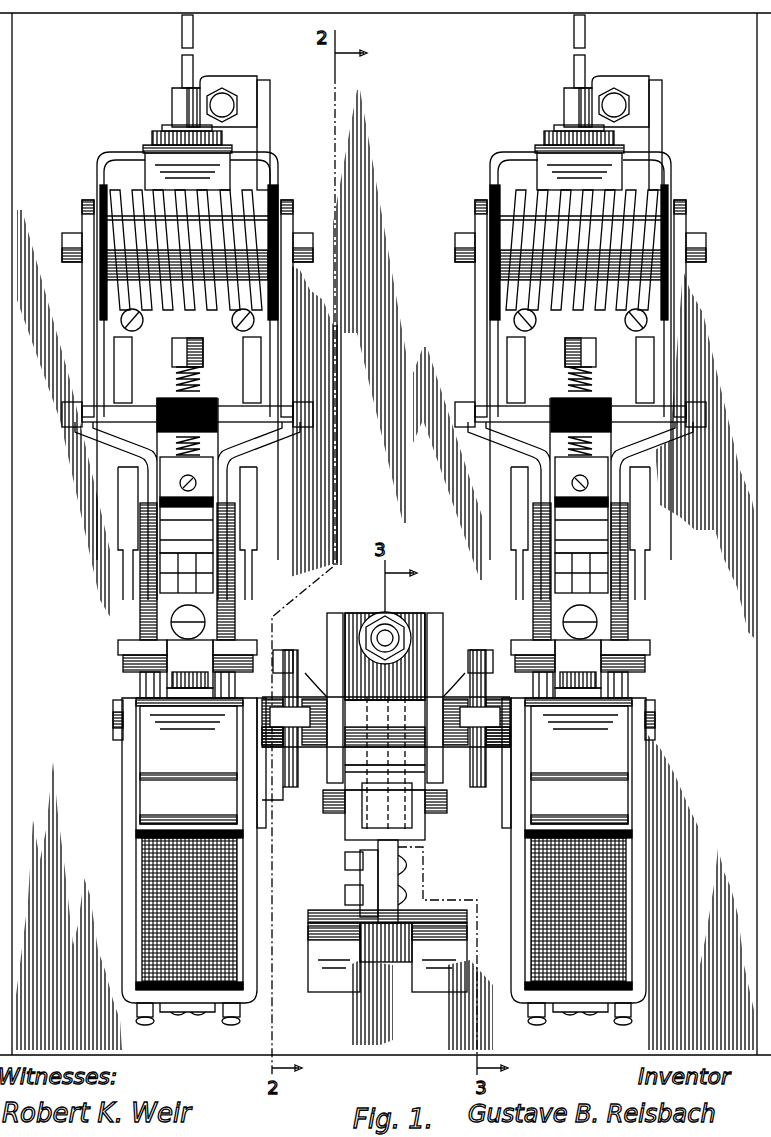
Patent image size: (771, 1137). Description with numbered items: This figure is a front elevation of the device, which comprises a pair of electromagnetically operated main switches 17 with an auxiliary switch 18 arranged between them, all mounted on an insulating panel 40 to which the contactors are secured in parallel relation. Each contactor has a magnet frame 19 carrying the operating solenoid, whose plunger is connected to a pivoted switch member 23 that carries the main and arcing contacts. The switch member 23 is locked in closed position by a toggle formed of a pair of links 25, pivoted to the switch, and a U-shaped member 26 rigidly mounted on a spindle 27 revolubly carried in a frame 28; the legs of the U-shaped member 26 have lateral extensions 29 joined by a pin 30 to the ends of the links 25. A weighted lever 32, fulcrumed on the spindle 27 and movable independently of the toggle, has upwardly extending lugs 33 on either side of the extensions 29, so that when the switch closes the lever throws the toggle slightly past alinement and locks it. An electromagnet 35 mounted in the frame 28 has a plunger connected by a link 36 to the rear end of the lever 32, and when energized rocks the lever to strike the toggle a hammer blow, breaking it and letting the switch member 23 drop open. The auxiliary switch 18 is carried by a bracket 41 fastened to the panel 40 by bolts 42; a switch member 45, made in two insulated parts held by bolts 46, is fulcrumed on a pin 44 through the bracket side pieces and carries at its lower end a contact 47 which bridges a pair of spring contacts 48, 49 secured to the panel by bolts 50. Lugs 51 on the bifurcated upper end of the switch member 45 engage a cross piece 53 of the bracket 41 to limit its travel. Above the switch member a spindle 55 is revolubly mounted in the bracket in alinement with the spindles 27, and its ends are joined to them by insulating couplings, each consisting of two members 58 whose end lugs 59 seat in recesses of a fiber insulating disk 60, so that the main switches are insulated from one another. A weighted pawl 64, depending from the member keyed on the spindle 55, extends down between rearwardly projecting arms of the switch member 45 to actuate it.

The main switch 17 is at (96, 131).
The auxiliary switch 18 is at (332, 597).
The magnet frame 19 is at (227, 152).
The switch member 23 is at (188, 580).
The links 25 is at (140, 600).
The U-shaped member 26 is at (167, 675).
The spindle 27 is at (120, 716).
The frame 28 is at (140, 623).
The lateral extensions 29 is at (153, 658).
The pin 30 is at (150, 647).
The weighted lever 32 is at (384, 765).
The lugs 33 is at (143, 686).
The electromagnet 35 is at (147, 887).
The link 36 is at (188, 688).
The insulating panel 40 is at (452, 90).
The bracket 41 is at (413, 623).
The bolts 42 is at (385, 635).
The pin 44 is at (448, 803).
The switch member 45 is at (413, 848).
The bolts 46 is at (407, 870).
The contact 47 is at (467, 910).
The spring contact 48 is at (335, 990).
The spring contact 49 is at (415, 990).
The bolts 50 is at (340, 912).
The lugs 51 is at (357, 790).
The cross piece 53 is at (350, 775).
The spindle 55 is at (355, 750).
The coupling members 58 is at (440, 643).
The lugs 59 is at (292, 715).
The insulating disk 60 is at (281, 792).
The pawl 64 is at (386, 753).